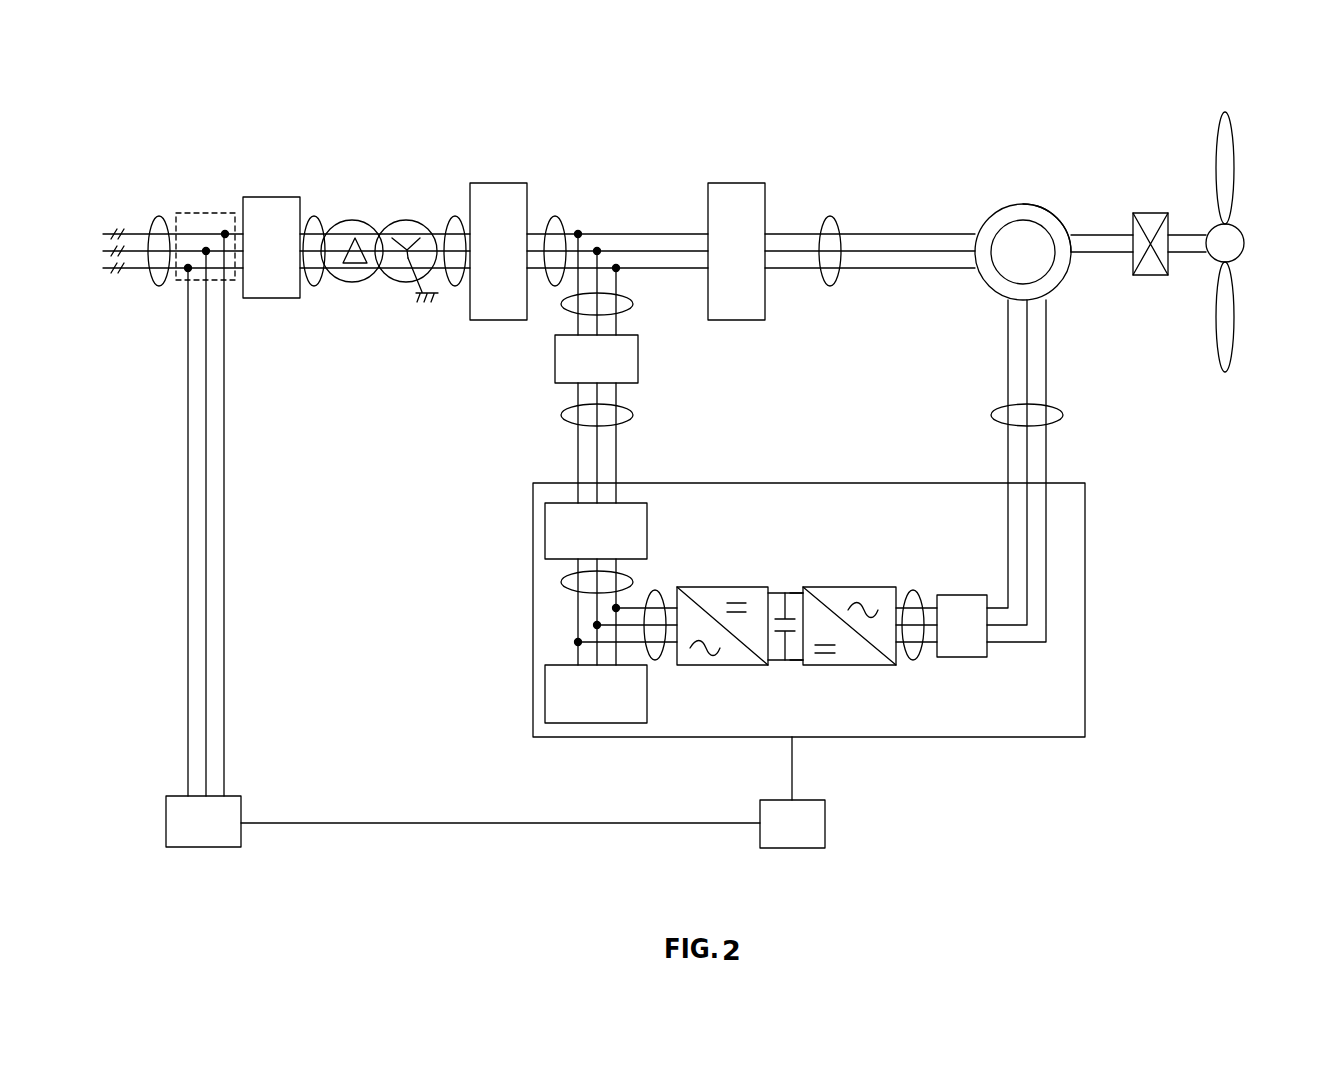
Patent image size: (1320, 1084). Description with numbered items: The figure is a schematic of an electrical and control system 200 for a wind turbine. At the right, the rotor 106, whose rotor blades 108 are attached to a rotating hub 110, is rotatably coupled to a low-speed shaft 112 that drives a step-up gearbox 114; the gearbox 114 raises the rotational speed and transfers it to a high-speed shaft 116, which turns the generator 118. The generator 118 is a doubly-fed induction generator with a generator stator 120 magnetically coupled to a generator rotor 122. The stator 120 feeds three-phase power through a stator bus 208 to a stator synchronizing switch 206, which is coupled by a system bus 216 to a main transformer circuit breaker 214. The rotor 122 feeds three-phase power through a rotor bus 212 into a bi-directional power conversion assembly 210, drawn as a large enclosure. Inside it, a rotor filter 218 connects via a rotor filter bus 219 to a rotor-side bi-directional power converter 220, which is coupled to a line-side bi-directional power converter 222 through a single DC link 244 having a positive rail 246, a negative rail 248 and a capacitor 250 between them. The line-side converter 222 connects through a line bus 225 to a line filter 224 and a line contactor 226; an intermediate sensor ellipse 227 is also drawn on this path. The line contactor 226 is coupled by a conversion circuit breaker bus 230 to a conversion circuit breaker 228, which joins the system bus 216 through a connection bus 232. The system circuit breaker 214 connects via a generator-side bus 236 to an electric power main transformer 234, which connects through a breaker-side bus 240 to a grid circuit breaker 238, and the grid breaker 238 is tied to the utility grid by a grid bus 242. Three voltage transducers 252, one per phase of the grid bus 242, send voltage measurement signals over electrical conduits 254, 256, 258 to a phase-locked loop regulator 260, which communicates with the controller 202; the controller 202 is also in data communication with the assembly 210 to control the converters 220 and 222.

The electrical and control system 200 is at (238, 122).
The rotor 106 is at (1242, 138).
The rotor blades 108 is at (1235, 182).
The hub 110 is at (1245, 243).
The low-speed shaft 112 is at (1189, 234).
The gearbox 114 is at (1146, 213).
The high-speed shaft 116 is at (1106, 253).
The generator 118 is at (1020, 165).
The generator stator 120 is at (1027, 204).
The generator rotor 122 is at (1002, 222).
The controller 202 is at (810, 841).
The stator synchronizing switch 206 is at (738, 183).
The stator bus 208 is at (830, 216).
The bi-directional power conversion assembly 210 is at (1085, 612).
The rotor bus 212 is at (1065, 413).
The main transformer circuit breaker 214 is at (500, 183).
The system bus 216 is at (555, 216).
The rotor filter 218 is at (965, 657).
The rotor filter bus 219 is at (918, 595).
The rotor-side bi-directional power converter 220 is at (900, 658).
The line-side bi-directional power converter 222 is at (666, 654).
The line filter 224 is at (545, 693).
The line bus 225 is at (562, 582).
The line contactor 226 is at (545, 535).
The line side bus sensor 227 is at (658, 596).
The conversion circuit breaker 228 is at (638, 355).
The conversion circuit breaker bus 230 is at (633, 415).
The connection bus 232 is at (634, 304).
The electric power main transformer 234 is at (406, 220).
The generator-side bus 236 is at (455, 216).
The grid circuit breaker 238 is at (259, 197).
The breaker-side bus 240 is at (314, 216).
The grid bus 242 is at (153, 216).
The DC link 244 is at (773, 540).
The positive rail 246 is at (796, 592).
The negative rail 248 is at (793, 665).
The capacitor 250 is at (781, 615).
The voltage transducers 252 is at (177, 292).
The electrical conduit 254 is at (224, 578).
The electrical conduit 256 is at (206, 542).
The electrical conduit 258 is at (188, 510).
The phase-locked loop regulator 260 is at (166, 823).